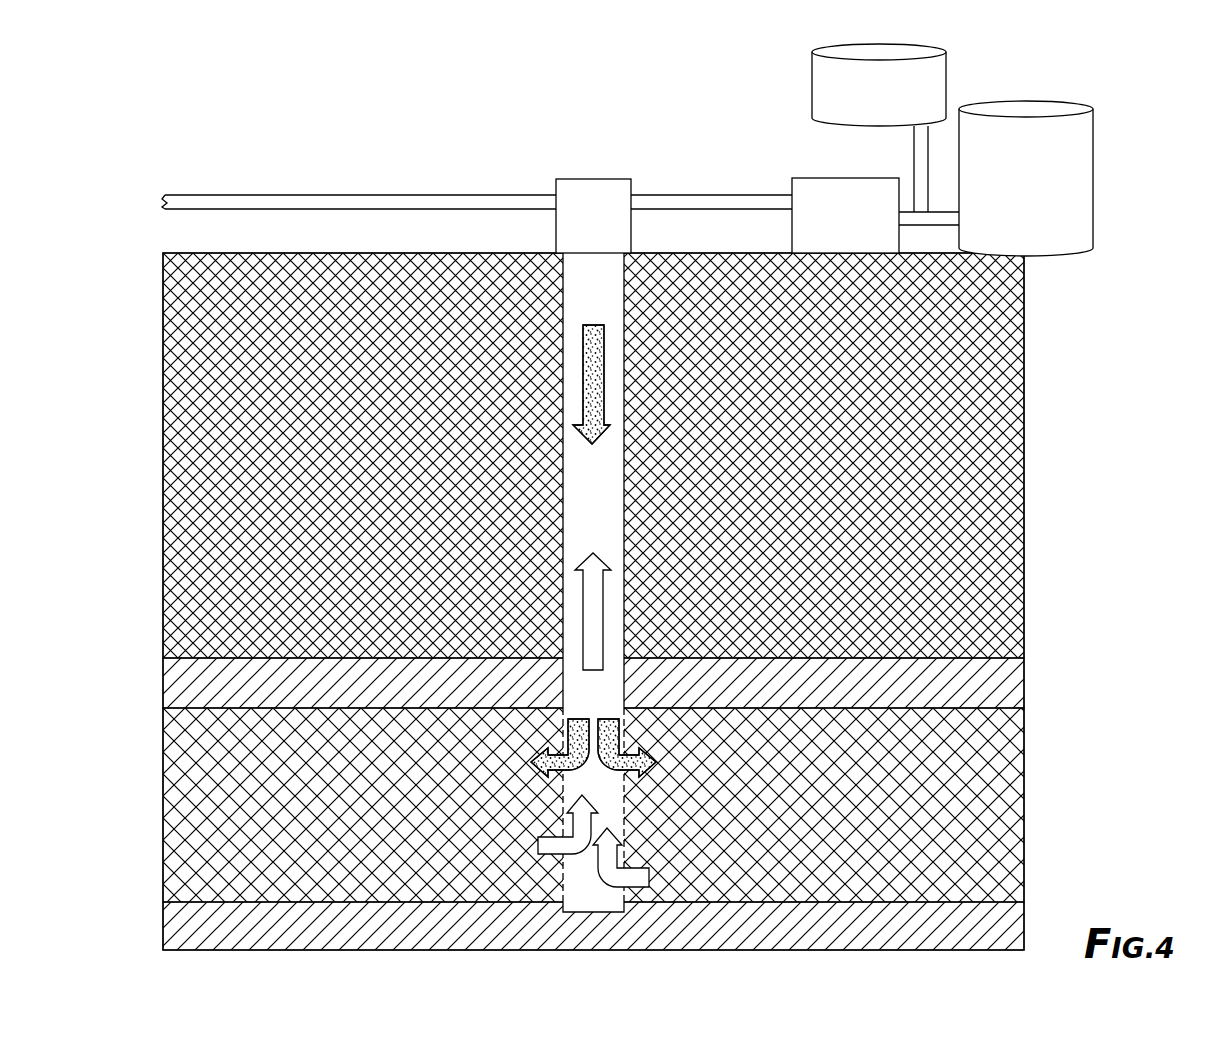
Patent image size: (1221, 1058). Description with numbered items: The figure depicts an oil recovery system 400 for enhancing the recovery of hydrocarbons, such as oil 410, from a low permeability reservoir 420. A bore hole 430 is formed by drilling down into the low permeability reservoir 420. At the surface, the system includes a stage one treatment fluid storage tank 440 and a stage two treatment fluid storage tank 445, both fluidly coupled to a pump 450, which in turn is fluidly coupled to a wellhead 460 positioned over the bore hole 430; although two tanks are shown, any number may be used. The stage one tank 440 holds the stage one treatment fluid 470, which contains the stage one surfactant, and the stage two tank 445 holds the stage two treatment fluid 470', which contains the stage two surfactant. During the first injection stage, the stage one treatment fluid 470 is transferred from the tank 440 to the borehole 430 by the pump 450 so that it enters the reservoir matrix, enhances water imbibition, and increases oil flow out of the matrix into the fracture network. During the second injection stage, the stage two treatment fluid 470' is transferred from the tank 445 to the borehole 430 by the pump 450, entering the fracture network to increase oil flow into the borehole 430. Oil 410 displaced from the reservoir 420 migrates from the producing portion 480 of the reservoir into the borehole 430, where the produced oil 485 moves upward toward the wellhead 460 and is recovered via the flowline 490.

The oil recovery system 400 is at (1032, 628).
The oil 410 is at (553, 853).
The low permeability reservoir 420 is at (377, 692).
The bore hole 430 is at (613, 513).
The stage one treatment fluid storage tank 440 is at (1052, 200).
The stage two treatment fluid storage tank 445 is at (897, 97).
The pump 450 is at (802, 178).
The wellhead 460 is at (570, 179).
The stage one treatment fluid 470 is at (503, 384).
The stage two treatment fluid 470' is at (593, 748).
The producing portion 480 is at (454, 786).
The produced oil 485 is at (605, 612).
The flowline 490 is at (332, 195).